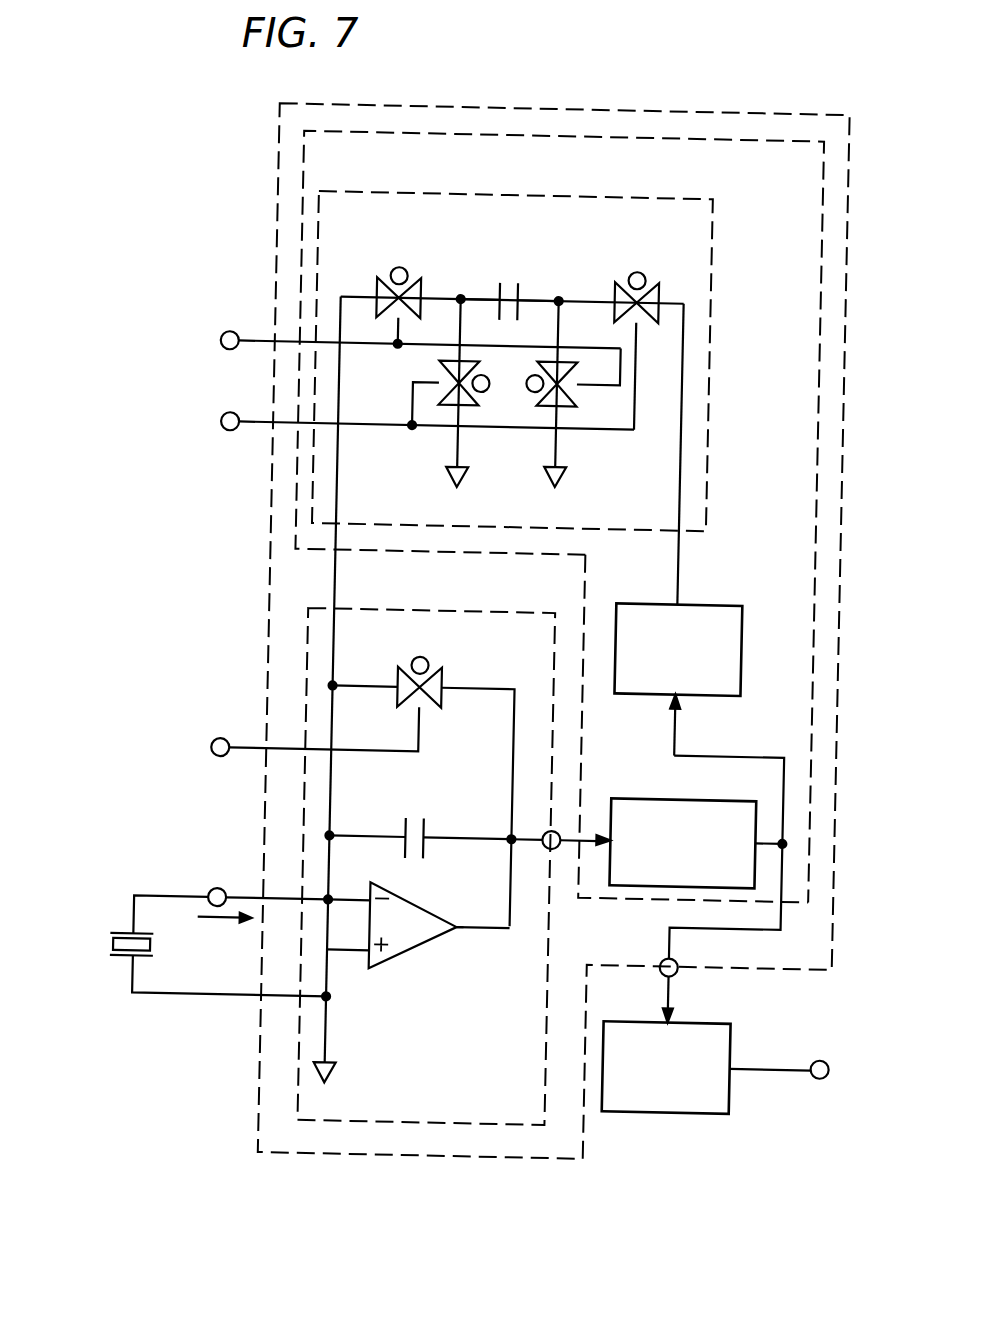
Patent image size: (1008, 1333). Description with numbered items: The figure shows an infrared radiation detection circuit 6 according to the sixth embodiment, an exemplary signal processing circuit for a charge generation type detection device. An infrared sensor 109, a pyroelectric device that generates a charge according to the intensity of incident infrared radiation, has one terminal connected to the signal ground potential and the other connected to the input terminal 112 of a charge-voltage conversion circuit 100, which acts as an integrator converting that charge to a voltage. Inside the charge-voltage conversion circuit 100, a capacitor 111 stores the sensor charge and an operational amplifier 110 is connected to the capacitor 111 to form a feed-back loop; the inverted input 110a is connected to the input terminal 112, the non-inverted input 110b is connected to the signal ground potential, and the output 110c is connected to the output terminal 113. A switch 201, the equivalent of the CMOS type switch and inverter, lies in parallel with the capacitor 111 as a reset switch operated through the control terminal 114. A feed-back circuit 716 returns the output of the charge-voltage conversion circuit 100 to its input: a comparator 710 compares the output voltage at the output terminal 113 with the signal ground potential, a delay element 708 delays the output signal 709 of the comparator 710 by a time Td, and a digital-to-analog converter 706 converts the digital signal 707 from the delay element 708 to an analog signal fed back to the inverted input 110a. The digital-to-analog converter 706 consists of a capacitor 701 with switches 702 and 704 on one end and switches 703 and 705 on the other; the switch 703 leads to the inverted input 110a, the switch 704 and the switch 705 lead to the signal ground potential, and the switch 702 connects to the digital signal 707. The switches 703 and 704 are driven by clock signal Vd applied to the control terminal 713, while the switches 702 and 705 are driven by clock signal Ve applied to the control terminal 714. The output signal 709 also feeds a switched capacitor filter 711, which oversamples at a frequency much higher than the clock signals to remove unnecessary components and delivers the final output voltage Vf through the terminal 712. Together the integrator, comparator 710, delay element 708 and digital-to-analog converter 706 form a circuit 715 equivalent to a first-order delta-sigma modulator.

The infrared radiation detection circuit 6 is at (485, 653).
The charge-voltage conversion circuit 100 is at (500, 613).
The infrared sensor 109 is at (117, 948).
The operational amplifier 110 is at (430, 942).
The inverted input 110a is at (352, 882).
The non-inverted input 110b is at (372, 958).
The output 110c is at (458, 928).
The capacitor 111 is at (405, 832).
The input terminal 112 is at (212, 897).
The output terminal 113 is at (548, 836).
The control terminal 114 is at (215, 748).
The switch 201 is at (430, 668).
The capacitor 701 is at (507, 284).
The switch 702 is at (630, 270).
The switch 703 is at (392, 270).
The switch 704 is at (567, 396).
The switch 705 is at (434, 378).
The digital-to-analog converter 706 is at (640, 196).
The digital signal 707 is at (678, 547).
The delay element 708 is at (738, 606).
The output signal 709 is at (790, 786).
The comparator 710 is at (658, 897).
The SCF 711 is at (683, 1112).
The terminal 712 is at (829, 1055).
The control terminal 713 is at (224, 338).
The control terminal 714 is at (220, 422).
The circuit 715 is at (762, 107).
The feed-back circuit 716 is at (820, 197).